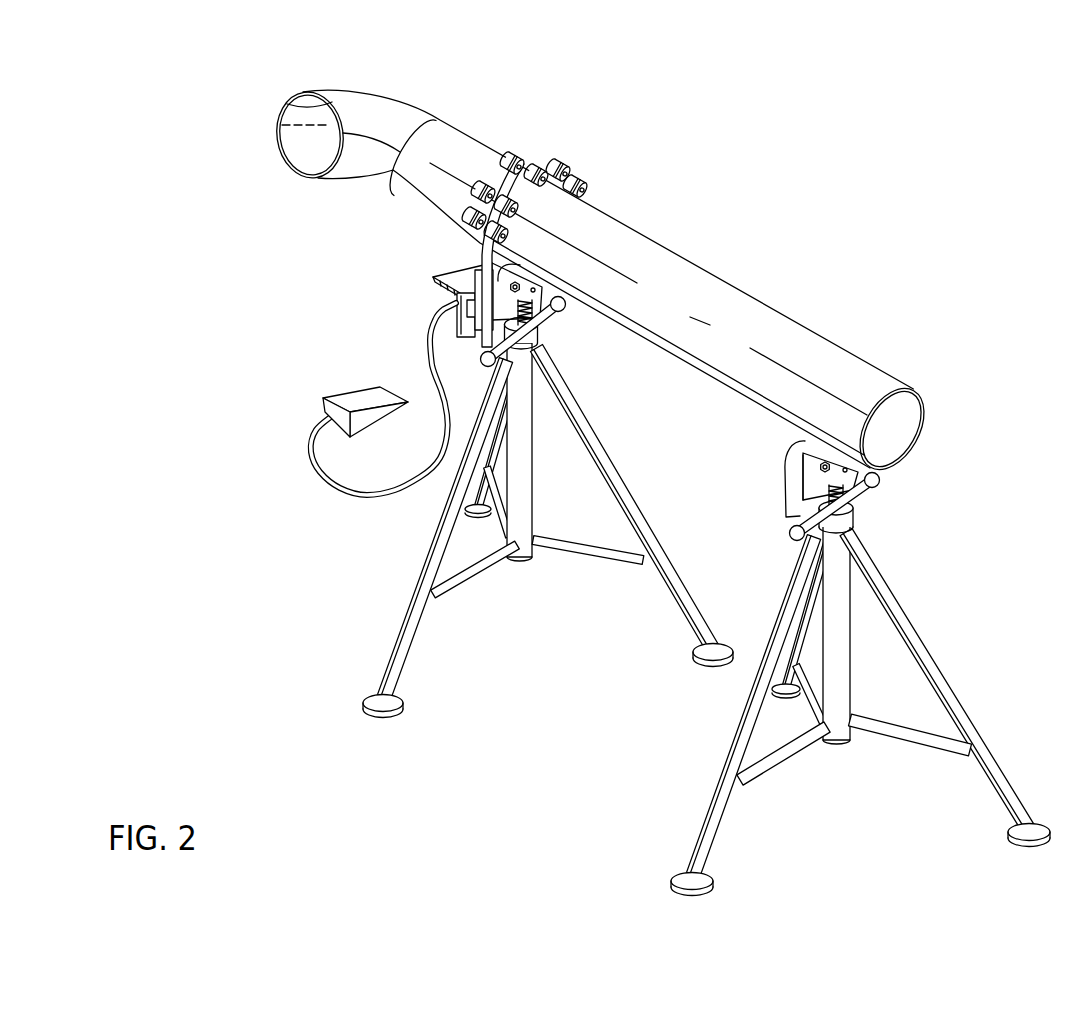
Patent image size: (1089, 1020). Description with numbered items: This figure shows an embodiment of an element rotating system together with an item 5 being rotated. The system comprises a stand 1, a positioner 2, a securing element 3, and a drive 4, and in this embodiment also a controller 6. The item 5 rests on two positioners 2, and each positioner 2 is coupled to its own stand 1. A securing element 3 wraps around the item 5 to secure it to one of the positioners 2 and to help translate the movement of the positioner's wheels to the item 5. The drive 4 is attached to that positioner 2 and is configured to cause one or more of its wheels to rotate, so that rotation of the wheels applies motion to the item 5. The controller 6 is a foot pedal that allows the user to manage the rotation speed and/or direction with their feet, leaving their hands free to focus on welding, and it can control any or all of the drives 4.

The stand 1 is at (402, 605).
The positioner 2 is at (520, 300).
The securing element 3 is at (505, 180).
The drive 4 is at (433, 280).
The item 5 is at (780, 323).
The controller 6 is at (323, 398).